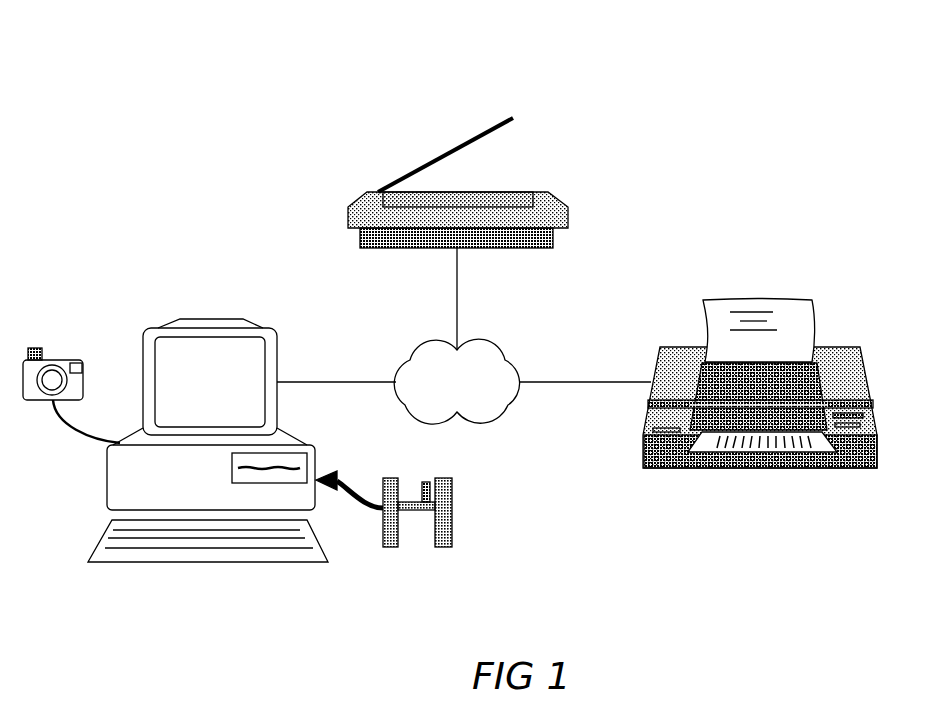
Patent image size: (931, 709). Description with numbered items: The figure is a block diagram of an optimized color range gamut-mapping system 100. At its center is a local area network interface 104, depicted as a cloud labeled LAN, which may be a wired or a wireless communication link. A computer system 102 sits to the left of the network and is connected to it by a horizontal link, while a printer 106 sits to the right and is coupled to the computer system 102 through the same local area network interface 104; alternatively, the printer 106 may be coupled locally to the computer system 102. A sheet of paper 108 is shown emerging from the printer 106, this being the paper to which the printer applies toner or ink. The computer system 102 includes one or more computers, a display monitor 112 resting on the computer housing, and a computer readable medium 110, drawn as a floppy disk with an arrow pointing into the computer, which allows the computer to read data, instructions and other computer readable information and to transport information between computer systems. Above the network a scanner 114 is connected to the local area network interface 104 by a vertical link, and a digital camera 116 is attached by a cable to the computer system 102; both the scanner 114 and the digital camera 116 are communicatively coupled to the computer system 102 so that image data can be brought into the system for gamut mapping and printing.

The optimized color range gamut-mapping system 100 is at (843, 53).
The computer system 102 is at (307, 443).
The local area network interface 104 is at (507, 360).
The printer 106 is at (847, 347).
The paper 108 is at (758, 300).
The computer readable medium 110 is at (452, 493).
The display monitor 112 is at (210, 328).
The scanner 114 is at (570, 213).
The digital camera 116 is at (53, 360).